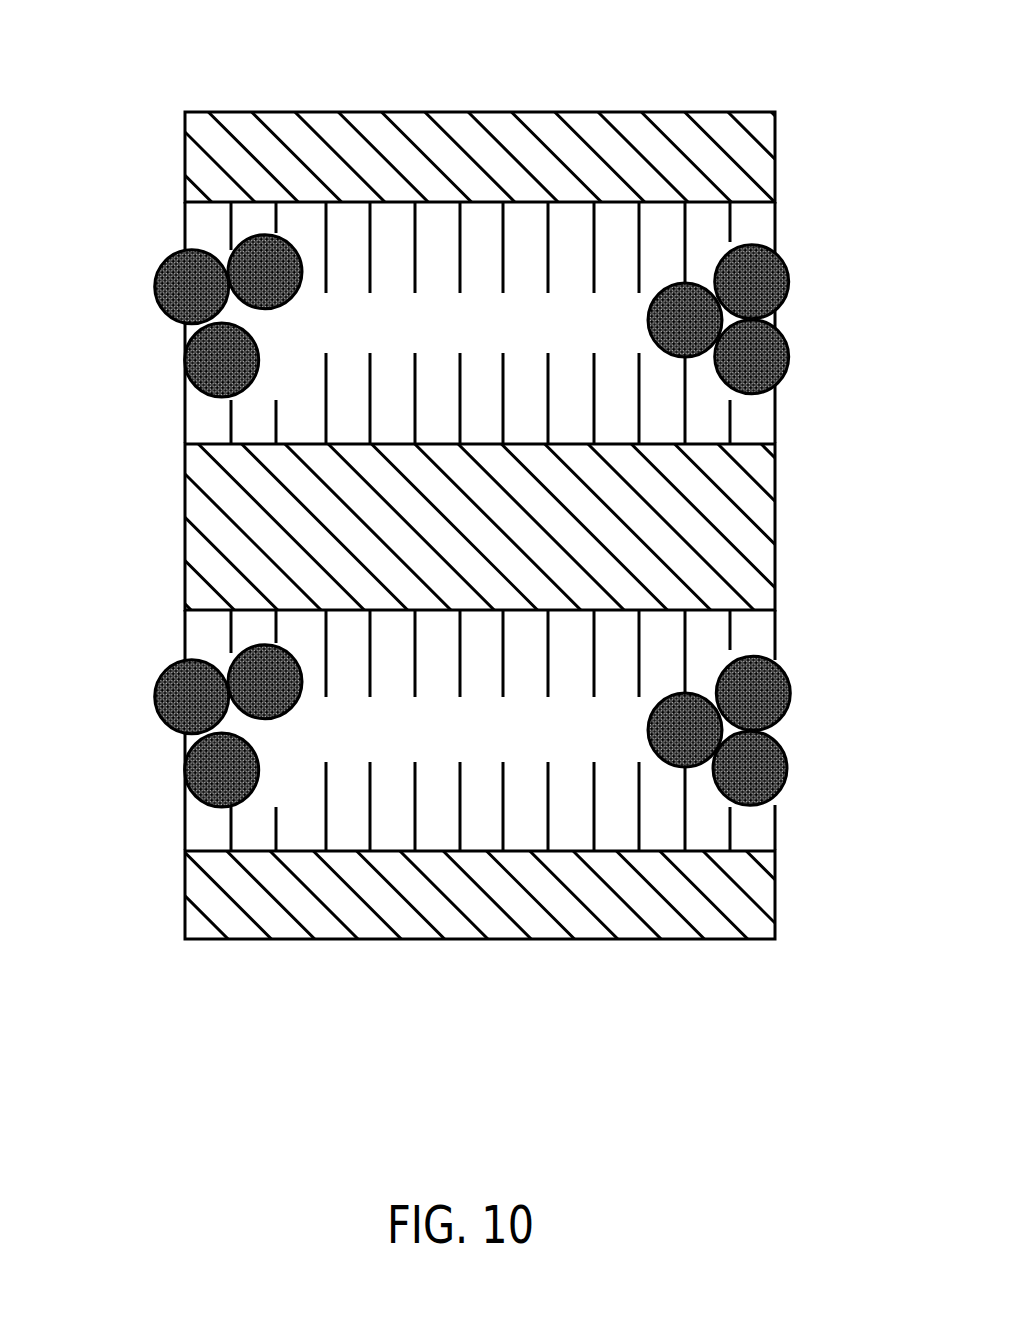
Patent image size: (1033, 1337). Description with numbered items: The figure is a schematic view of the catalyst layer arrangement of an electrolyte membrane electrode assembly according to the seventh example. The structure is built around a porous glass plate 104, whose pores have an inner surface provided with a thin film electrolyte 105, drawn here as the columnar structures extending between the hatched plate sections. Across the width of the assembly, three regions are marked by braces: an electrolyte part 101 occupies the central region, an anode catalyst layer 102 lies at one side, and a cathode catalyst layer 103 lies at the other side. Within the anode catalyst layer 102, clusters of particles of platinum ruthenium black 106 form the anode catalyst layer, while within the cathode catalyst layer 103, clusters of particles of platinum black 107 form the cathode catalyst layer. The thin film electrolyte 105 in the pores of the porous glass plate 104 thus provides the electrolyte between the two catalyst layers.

The electrolyte part 101 is at (643, 995).
The anode catalyst layer 102 is at (307, 995).
The cathode catalyst layer 103 is at (780, 995).
The porous glass plate 104 is at (602, 140).
The thin film electrolyte 105 is at (640, 243).
The platinum ruthenium black 106 is at (173, 700).
The platinum black 107 is at (767, 765).